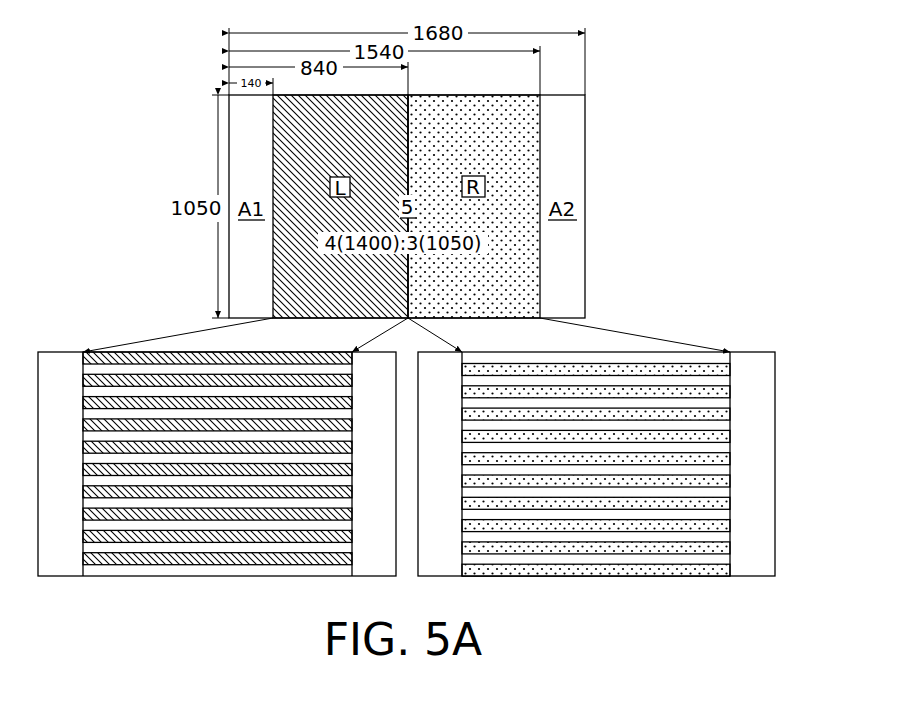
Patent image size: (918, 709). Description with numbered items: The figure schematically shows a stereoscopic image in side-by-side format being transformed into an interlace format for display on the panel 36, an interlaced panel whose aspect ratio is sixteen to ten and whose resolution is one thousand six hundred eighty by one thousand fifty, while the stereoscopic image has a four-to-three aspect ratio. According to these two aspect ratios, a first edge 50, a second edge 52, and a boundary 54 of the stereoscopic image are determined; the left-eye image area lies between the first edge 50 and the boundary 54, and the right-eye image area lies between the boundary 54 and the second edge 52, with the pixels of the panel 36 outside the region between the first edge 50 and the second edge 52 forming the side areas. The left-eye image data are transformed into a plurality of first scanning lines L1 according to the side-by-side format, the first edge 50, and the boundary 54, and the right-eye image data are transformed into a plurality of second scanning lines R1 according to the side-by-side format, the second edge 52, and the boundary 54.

The panel 36 is at (433, 206).
The first edge 50 is at (273, 157).
The second edge 52 is at (540, 157).
The boundary 54 is at (408, 157).
The first scanning lines L1 is at (300, 352).
The second scanning lines R1 is at (565, 576).